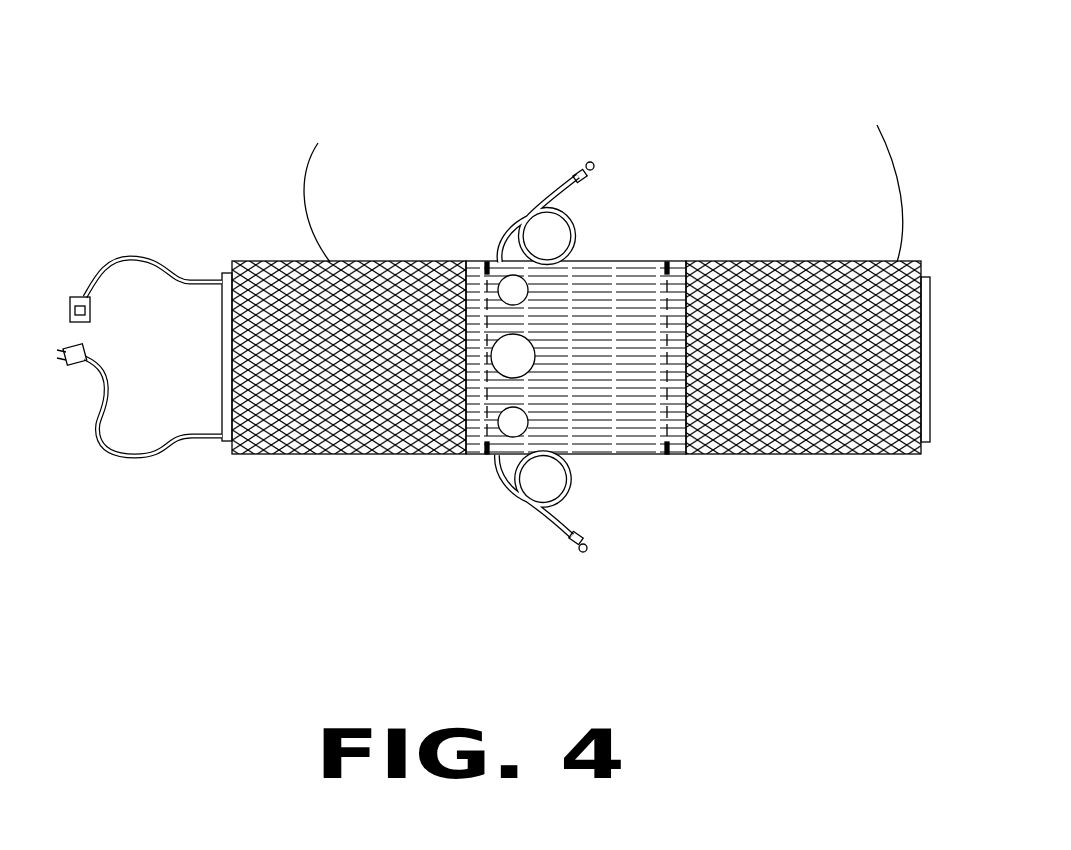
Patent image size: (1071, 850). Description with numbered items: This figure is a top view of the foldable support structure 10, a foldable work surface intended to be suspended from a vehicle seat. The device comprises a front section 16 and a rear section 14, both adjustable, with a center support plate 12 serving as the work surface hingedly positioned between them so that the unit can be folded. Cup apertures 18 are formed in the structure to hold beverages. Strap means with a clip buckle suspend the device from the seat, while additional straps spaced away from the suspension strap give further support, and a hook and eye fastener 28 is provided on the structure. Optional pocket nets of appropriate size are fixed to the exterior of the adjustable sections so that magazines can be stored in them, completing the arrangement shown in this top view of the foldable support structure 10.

The foldable support structure 10 is at (576, 294).
The center support plate 12 is at (591, 346).
The rear support plate 14 is at (296, 456).
The front apertures 16 is at (841, 457).
The cup apertures 18 is at (523, 413).
The hook and eye fastener 28 is at (593, 165).